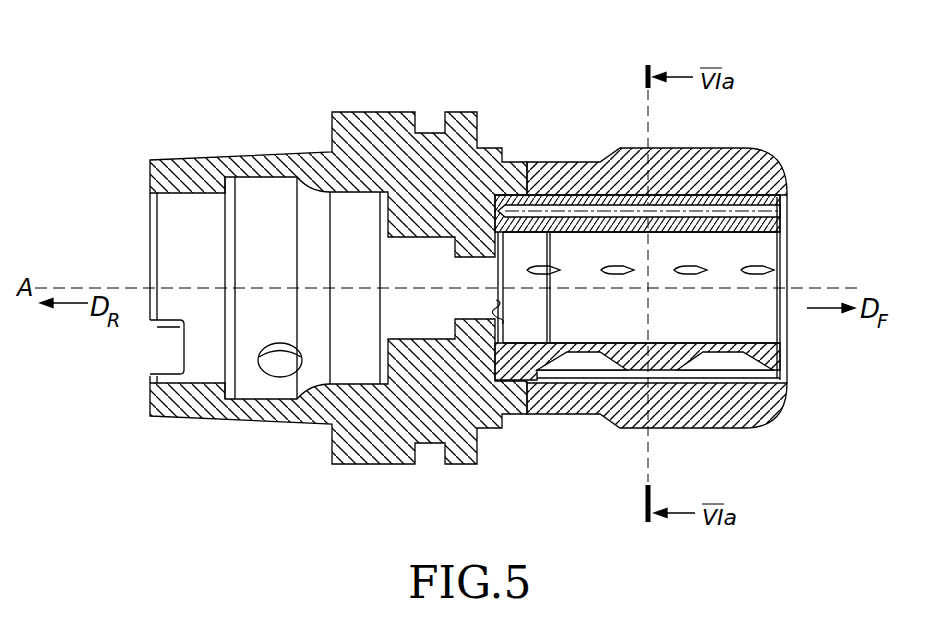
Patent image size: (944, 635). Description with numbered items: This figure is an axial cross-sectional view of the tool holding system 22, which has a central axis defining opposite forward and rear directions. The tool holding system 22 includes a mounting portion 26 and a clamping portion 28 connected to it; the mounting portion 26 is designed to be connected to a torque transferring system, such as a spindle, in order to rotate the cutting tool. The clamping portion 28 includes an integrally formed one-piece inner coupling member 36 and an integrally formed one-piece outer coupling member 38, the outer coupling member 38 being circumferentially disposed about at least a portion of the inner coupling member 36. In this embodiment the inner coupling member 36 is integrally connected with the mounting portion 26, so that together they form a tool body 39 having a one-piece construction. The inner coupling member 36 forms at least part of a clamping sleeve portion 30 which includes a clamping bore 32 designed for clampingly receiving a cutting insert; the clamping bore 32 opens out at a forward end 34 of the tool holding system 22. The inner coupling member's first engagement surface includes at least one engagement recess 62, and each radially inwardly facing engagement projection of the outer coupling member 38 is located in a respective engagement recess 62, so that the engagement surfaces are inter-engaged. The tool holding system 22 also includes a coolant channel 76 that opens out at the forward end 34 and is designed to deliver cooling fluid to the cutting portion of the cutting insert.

The tool holding system 22 is at (782, 82).
The mounting portion 26 is at (285, 122).
The clamping portion 28 is at (605, 135).
The clamping sleeve portion 30 is at (784, 372).
The clamping bore 32 is at (748, 252).
The forward end 34 is at (800, 185).
The inner coupling member 36 is at (594, 417).
The outer coupling member 38 is at (745, 170).
The tool body 39 is at (363, 428).
The engagement recess 62 is at (580, 350).
The coolant channel 76 is at (787, 211).